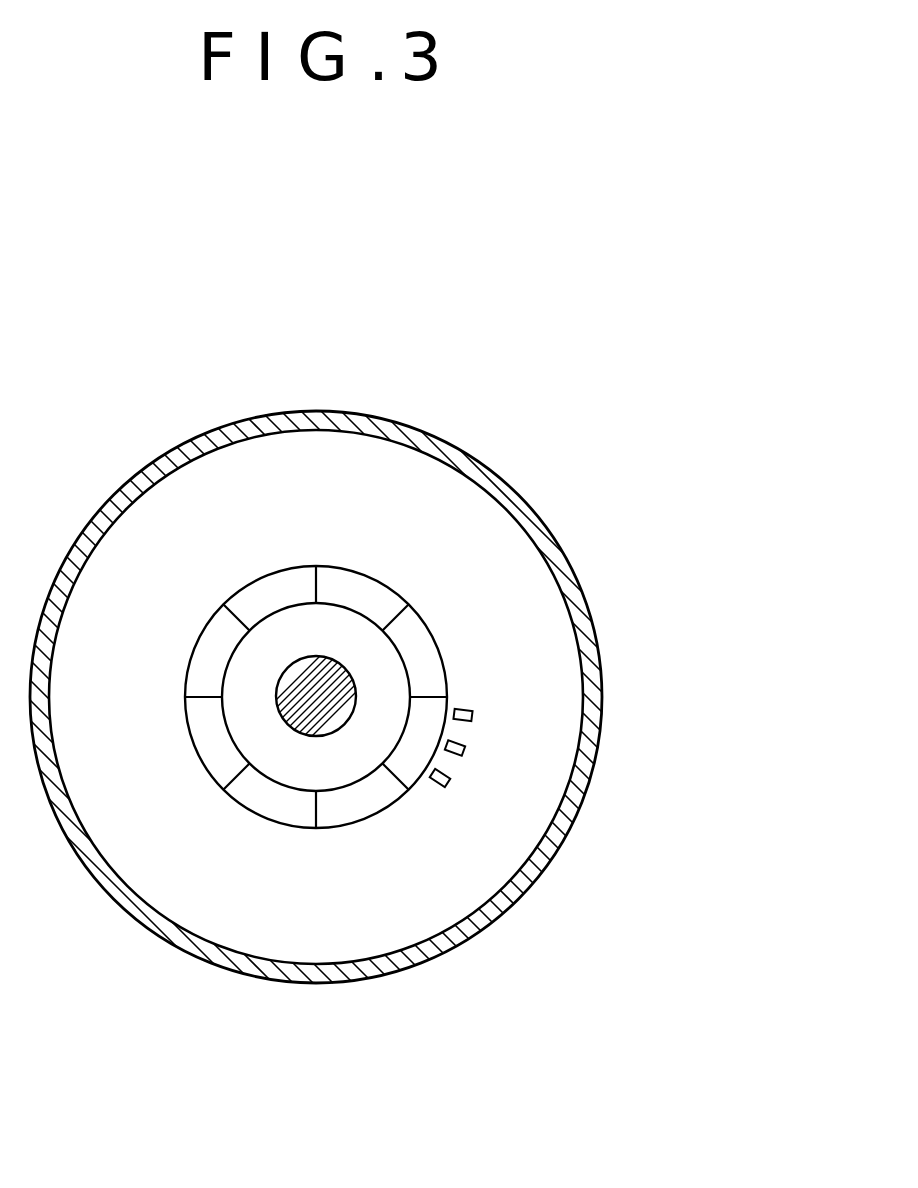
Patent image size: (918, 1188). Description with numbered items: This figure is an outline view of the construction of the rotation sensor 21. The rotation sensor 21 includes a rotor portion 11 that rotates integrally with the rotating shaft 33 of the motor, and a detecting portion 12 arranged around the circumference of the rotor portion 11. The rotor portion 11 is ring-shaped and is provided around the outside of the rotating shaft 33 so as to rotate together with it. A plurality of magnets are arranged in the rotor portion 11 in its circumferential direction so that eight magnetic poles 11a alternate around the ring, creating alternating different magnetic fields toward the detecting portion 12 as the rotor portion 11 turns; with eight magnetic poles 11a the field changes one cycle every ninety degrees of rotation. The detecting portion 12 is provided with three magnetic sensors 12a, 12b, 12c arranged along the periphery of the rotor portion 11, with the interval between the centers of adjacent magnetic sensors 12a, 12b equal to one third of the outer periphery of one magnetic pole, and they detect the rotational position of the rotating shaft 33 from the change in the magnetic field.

The rotor portion 11 is at (298, 568).
The magnetic pole 11a is at (377, 578).
The detecting portion 12 is at (600, 773).
The magnetic sensor 12a is at (472, 713).
The magnetic sensor 12b is at (463, 747).
The magnetic sensor 12c is at (447, 782).
The rotation sensor 21 is at (525, 402).
The rotating shaft 33 is at (295, 727).